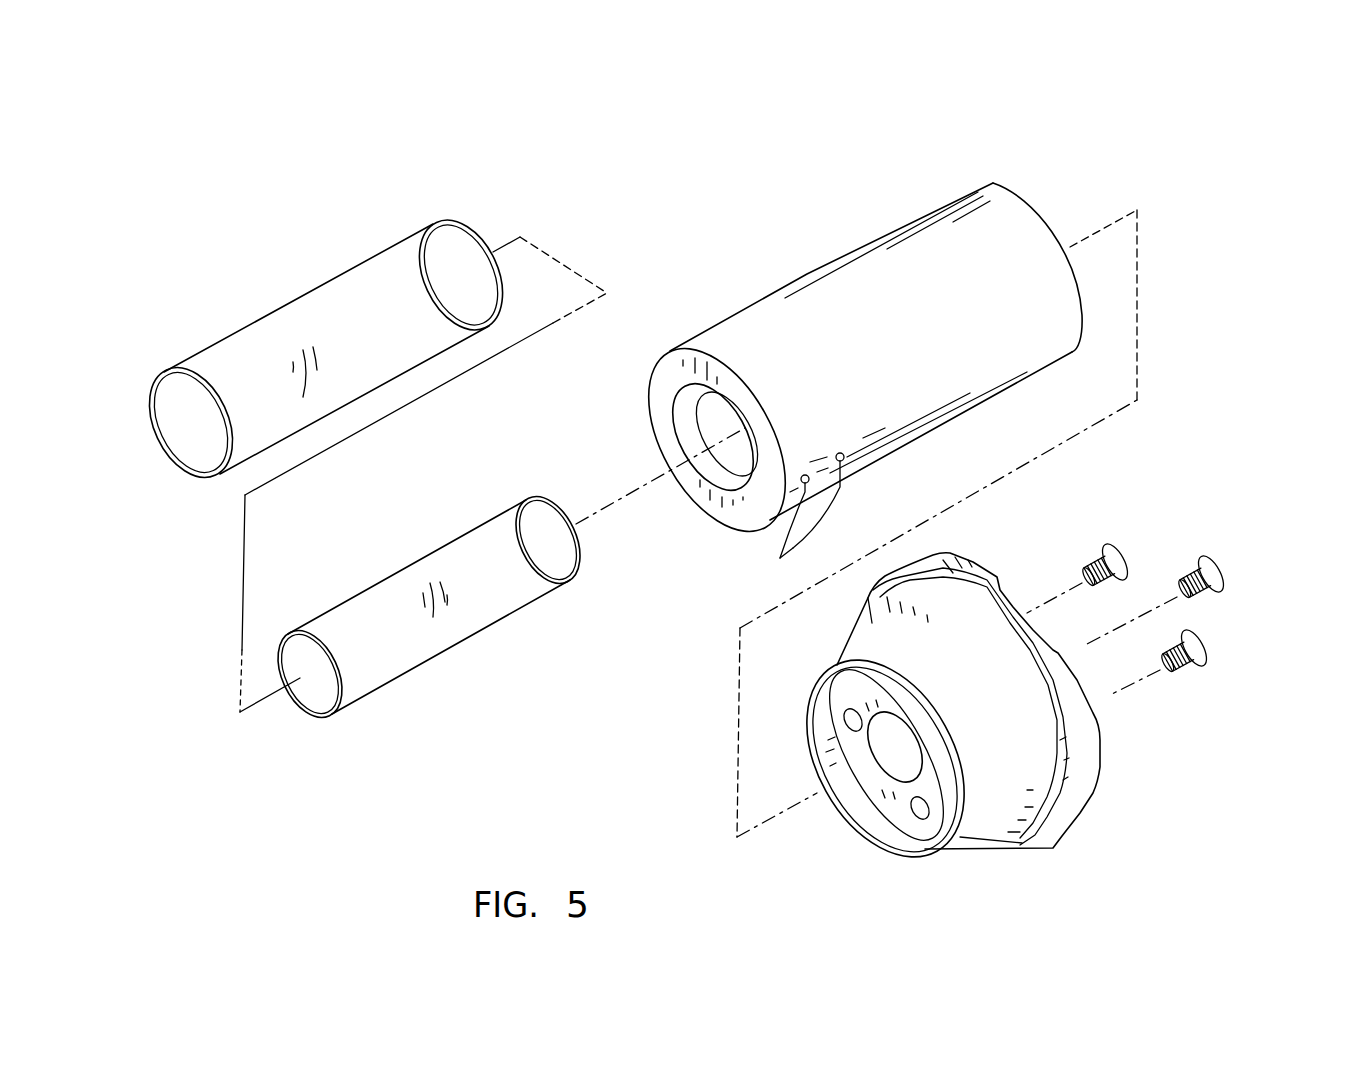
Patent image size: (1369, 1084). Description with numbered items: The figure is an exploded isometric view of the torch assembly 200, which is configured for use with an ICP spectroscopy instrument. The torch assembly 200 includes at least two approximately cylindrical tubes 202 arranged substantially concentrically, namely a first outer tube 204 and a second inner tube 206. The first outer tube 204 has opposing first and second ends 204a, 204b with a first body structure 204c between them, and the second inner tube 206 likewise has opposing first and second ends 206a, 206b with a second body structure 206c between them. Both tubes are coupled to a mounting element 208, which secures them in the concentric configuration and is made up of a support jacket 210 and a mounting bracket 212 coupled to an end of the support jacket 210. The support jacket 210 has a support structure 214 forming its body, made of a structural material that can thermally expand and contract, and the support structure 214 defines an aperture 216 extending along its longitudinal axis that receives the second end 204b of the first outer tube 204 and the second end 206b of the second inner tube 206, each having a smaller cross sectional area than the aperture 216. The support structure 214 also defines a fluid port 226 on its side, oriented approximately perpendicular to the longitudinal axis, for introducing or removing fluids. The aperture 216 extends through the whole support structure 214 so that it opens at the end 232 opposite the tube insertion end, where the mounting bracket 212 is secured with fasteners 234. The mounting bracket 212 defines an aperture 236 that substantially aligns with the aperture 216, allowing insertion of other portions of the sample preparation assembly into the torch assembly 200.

The torch assembly 200 is at (651, 248).
The approximately cylindrical tubes 202 is at (270, 760).
The first outer tube 204 is at (318, 285).
The first end 204a is at (160, 372).
The second end 204b is at (450, 222).
The first body structure 204c is at (270, 337).
The second inner tube 206 is at (448, 650).
The first end 206a is at (329, 727).
The second end 206b is at (580, 570).
The second body structure 206c is at (433, 565).
The mounting element 208 is at (1127, 140).
The support jacket 210 is at (808, 273).
The mounting bracket 212 is at (1053, 850).
The support structure 214 is at (803, 332).
The aperture 216 is at (680, 421).
The fluid port 226 is at (786, 525).
The end 232 is at (992, 181).
The fasteners 234 is at (1197, 560).
The aperture 236 is at (892, 748).